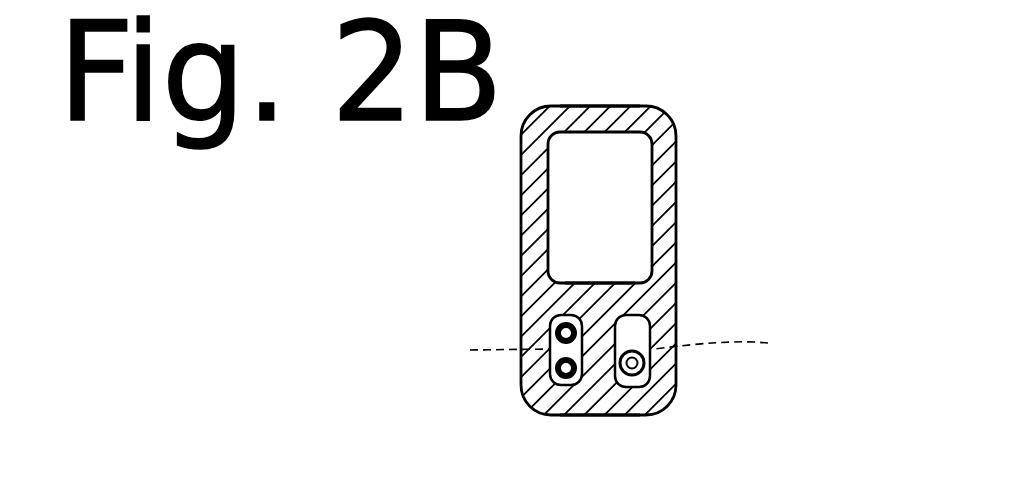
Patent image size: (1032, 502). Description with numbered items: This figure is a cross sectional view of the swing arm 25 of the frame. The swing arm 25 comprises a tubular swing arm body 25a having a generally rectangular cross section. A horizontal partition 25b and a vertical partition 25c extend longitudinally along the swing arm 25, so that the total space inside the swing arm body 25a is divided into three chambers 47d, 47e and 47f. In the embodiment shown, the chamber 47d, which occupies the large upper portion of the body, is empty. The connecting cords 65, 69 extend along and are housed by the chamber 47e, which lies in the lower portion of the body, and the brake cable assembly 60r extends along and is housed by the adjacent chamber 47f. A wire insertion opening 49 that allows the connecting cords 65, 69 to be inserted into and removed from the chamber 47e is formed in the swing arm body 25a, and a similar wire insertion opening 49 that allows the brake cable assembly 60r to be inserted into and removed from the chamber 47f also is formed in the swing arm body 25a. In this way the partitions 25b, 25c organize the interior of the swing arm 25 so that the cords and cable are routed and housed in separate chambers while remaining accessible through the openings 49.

The swing arm 25 is at (704, 223).
The tubular swing arm body 25a is at (660, 116).
The horizontal partition 25b is at (579, 291).
The vertical partition 25c is at (586, 377).
The chamber 47d is at (632, 178).
The chamber 47e is at (547, 345).
The chamber 47f is at (636, 329).
The connecting cord 65 is at (556, 328).
The connecting cord 69 is at (535, 388).
The wire insertion opening 49 is at (616, 347).
The brake cable assembly 60r is at (645, 364).